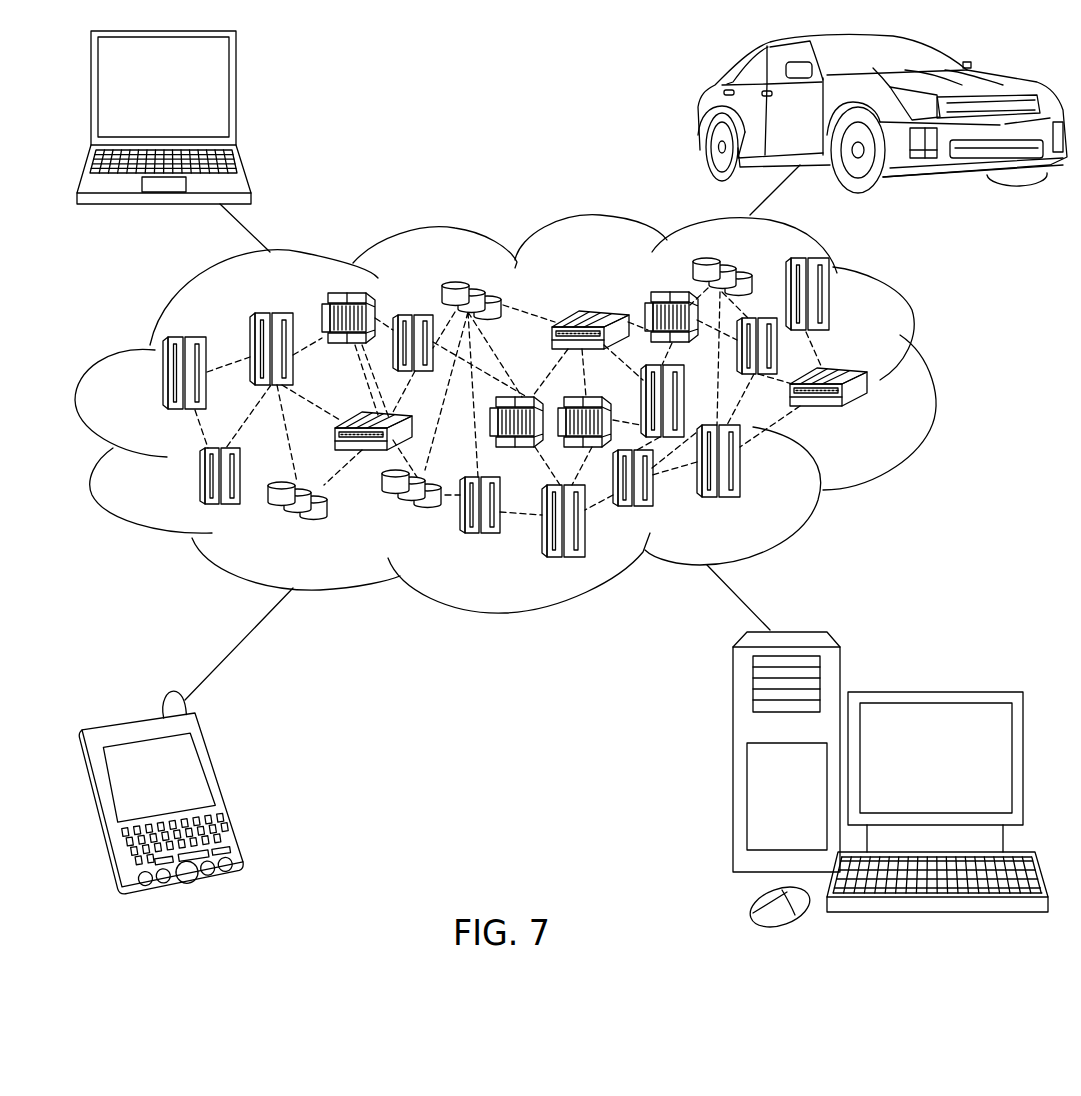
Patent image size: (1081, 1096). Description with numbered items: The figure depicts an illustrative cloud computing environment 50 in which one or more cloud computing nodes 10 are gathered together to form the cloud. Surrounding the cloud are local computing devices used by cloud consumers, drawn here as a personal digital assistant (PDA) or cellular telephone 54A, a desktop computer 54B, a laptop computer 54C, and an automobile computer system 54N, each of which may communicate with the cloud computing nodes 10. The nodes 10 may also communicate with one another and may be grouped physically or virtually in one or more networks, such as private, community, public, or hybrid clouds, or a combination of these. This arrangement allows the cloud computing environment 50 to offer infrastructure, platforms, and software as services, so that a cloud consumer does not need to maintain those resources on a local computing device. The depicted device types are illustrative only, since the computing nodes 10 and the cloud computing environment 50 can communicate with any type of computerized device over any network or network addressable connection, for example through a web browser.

The cloud computing nodes 10 is at (872, 417).
The cloud computing environment 50 is at (933, 385).
The personal digital assistant (PDA) or cellular telephone 54A is at (227, 788).
The desktop computer 54B is at (932, 690).
The laptop computer 54C is at (236, 95).
The automobile computer system 54N is at (698, 109).